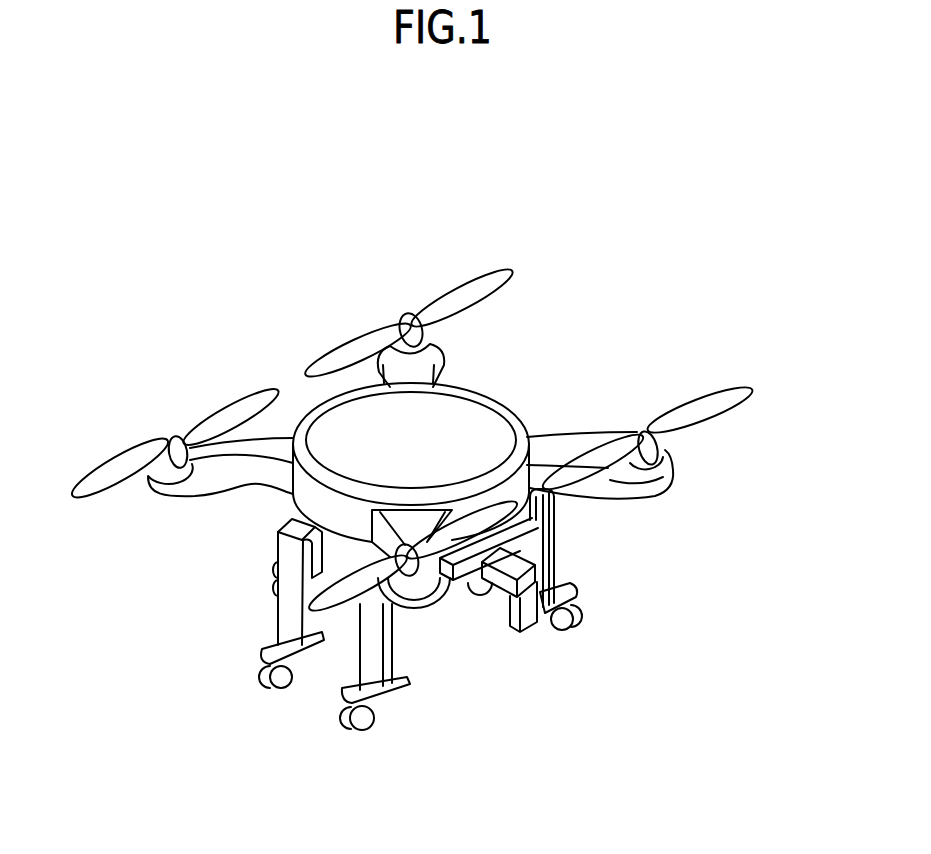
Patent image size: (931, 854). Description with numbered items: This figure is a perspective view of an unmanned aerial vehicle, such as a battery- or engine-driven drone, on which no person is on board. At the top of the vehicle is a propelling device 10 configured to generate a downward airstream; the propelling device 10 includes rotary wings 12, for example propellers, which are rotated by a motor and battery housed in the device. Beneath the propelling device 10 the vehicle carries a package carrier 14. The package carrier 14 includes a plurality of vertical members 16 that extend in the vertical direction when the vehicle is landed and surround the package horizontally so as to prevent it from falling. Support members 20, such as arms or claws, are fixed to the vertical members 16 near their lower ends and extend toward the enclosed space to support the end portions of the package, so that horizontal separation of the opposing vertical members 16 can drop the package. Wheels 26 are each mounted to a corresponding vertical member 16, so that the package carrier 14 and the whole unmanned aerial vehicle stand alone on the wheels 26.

The propelling device 10 is at (472, 346).
The rotary wings 12 is at (488, 283).
The package carrier 14 is at (572, 565).
The vertical members 16 is at (556, 520).
The support members 20 is at (397, 673).
The wheels 26 is at (266, 686).